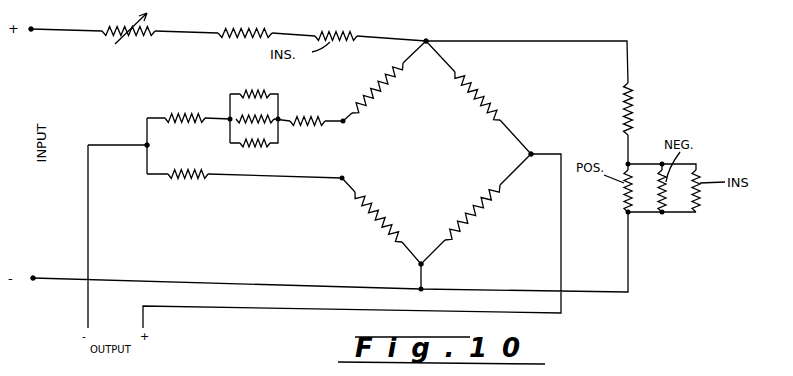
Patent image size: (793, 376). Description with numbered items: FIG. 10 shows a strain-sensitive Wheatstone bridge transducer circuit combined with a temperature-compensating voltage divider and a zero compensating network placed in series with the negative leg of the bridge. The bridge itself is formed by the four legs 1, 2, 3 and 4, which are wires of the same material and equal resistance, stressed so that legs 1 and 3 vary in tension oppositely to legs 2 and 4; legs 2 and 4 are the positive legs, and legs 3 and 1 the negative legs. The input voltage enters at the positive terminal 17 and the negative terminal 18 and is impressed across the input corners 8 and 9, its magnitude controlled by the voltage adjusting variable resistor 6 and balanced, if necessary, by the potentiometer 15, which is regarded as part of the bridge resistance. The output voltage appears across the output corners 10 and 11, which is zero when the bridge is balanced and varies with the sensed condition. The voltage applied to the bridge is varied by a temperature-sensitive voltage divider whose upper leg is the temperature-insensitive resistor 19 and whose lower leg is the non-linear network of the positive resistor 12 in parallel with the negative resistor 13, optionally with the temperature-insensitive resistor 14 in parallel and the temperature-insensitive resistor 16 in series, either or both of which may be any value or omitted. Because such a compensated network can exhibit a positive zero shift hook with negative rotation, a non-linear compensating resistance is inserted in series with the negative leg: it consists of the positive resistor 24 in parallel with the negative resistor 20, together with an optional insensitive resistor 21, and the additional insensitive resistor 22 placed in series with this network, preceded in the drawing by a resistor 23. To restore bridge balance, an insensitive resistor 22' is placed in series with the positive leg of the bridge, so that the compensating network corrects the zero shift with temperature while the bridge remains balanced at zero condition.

The positive input terminal 17 is at (31, 29).
The negative input terminal 18 is at (33, 278).
The variable resistor 6 is at (155, 31).
The potentiometer 15 is at (252, 31).
The temperature-insensitive resistor 19 is at (353, 34).
The input corner 8 is at (427, 39).
The leg of the bridge 1 is at (368, 94).
The leg of the bridge 2 is at (487, 94).
The leg of the bridge 3 is at (466, 212).
The leg of the bridge 4 is at (372, 202).
The input corner 9 is at (423, 266).
The output corner 10 is at (532, 152).
The output corner 11 is at (146, 144).
The positive resistor 12 is at (624, 192).
The negative resistor 13 is at (660, 204).
The temperature-insensitive resistor 14 is at (699, 207).
The temperature-insensitive resistor 16 is at (631, 107).
The negative resistor 20 is at (258, 118).
The insensitive resistor 21 is at (256, 145).
The insensitive resistor 22 is at (313, 132).
The insensitive resistor 22' is at (188, 187).
The resistor 23 is at (176, 116).
The positive resistor 24 is at (265, 93).